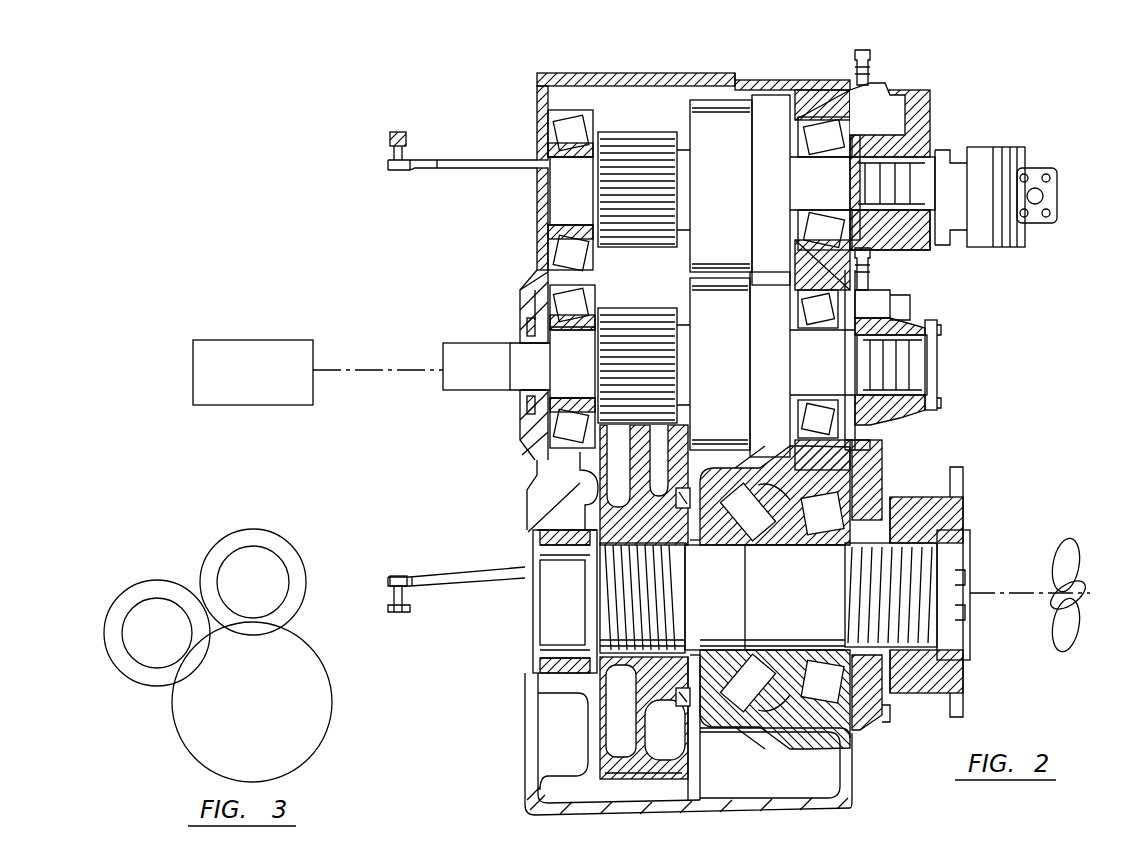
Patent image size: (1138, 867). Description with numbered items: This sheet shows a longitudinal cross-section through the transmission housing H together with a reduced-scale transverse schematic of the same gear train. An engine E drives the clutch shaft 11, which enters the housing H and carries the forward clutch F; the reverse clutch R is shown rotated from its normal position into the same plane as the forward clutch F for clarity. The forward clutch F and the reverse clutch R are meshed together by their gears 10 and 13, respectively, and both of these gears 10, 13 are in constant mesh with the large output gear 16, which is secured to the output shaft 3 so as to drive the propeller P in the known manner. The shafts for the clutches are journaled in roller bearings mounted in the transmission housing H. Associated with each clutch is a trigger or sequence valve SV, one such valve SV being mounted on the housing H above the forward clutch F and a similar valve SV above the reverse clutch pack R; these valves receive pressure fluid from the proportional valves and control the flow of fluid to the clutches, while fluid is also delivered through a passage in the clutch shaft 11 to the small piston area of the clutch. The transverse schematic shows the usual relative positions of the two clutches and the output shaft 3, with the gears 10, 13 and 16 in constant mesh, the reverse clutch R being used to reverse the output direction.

In FIG. 2, the engine E is at (235, 340).
In FIG. 2, the clutch shaft 11 is at (495, 390).
In FIG. 2, the gear 13 is at (642, 130).
In FIG. 3, the gear 13 is at (282, 570).
In FIG. 2, the gear 10 is at (648, 306).
In FIG. 3, the gear 10 is at (150, 668).
In FIG. 2, the reverse clutch R is at (740, 190).
In FIG. 3, the reverse clutch R is at (259, 530).
In FIG. 2, the forward clutch F is at (740, 364).
In FIG. 3, the forward clutch F is at (157, 580).
In FIG. 2, the transmission housing H is at (812, 80).
In FIG. 2, the sequence valve SV is at (872, 70).
In FIG. 2, the output gear 16 is at (690, 764).
In FIG. 3, the output gear 16 is at (332, 700).
In FIG. 2, the output shaft 3 is at (1022, 598).
In FIG. 2, the propeller P is at (1075, 640).